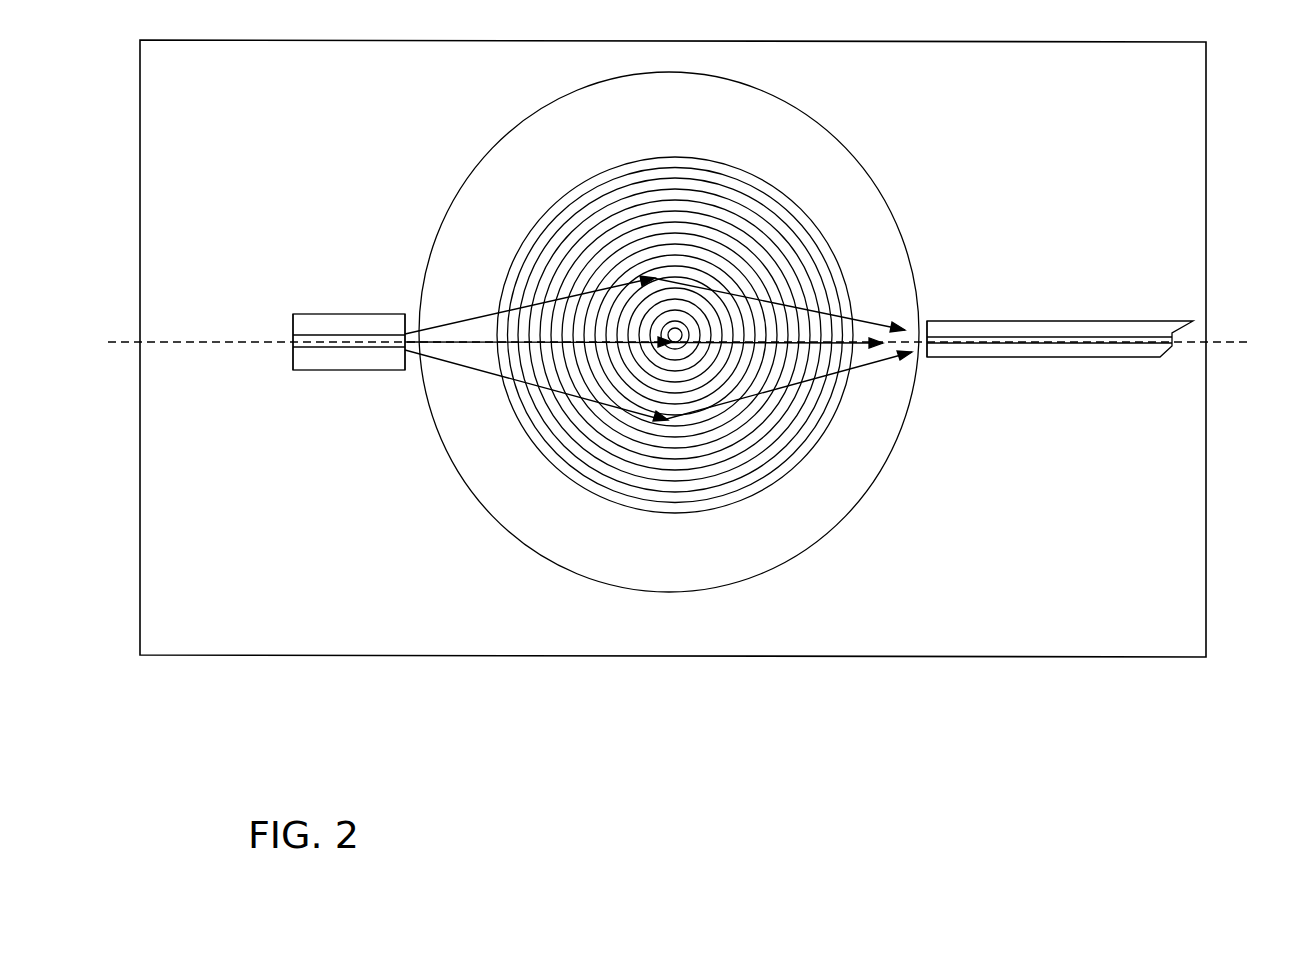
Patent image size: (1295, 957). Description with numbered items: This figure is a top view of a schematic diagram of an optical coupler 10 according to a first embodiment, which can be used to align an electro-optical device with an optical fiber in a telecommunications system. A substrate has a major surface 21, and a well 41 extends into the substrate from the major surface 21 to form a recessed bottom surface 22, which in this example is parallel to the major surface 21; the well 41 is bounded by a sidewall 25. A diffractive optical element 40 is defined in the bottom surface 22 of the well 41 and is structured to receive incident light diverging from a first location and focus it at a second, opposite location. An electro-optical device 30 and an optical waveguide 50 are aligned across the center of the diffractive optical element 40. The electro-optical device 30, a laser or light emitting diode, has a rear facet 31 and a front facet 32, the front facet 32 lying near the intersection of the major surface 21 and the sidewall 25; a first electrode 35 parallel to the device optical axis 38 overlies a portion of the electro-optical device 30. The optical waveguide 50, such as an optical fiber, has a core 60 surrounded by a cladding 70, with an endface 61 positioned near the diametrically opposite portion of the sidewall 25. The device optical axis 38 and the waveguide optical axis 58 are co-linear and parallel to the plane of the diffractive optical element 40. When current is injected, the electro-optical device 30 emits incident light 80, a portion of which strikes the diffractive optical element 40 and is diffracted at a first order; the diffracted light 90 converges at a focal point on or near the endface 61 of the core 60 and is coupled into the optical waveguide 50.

The optical coupler 10 is at (648, 730).
The major surface 21 is at (227, 632).
The bottom surface 22 is at (815, 502).
The sidewall 25 is at (433, 238).
The electro-optical device 30 is at (371, 322).
The rear facet 31 is at (293, 347).
The front facet 32 is at (405, 355).
The first electrode 35 is at (320, 343).
The device optical axis 38 is at (140, 342).
The diffractive optical element 40 is at (607, 478).
The well 41 is at (553, 138).
The optical waveguide 50 is at (1024, 358).
The waveguide optical axis 58 is at (1218, 342).
The core 60 is at (1092, 341).
The endface 61 is at (912, 350).
The cladding 70 is at (1073, 333).
The incident light 80 is at (452, 290).
The diffracted light 90 is at (860, 280).